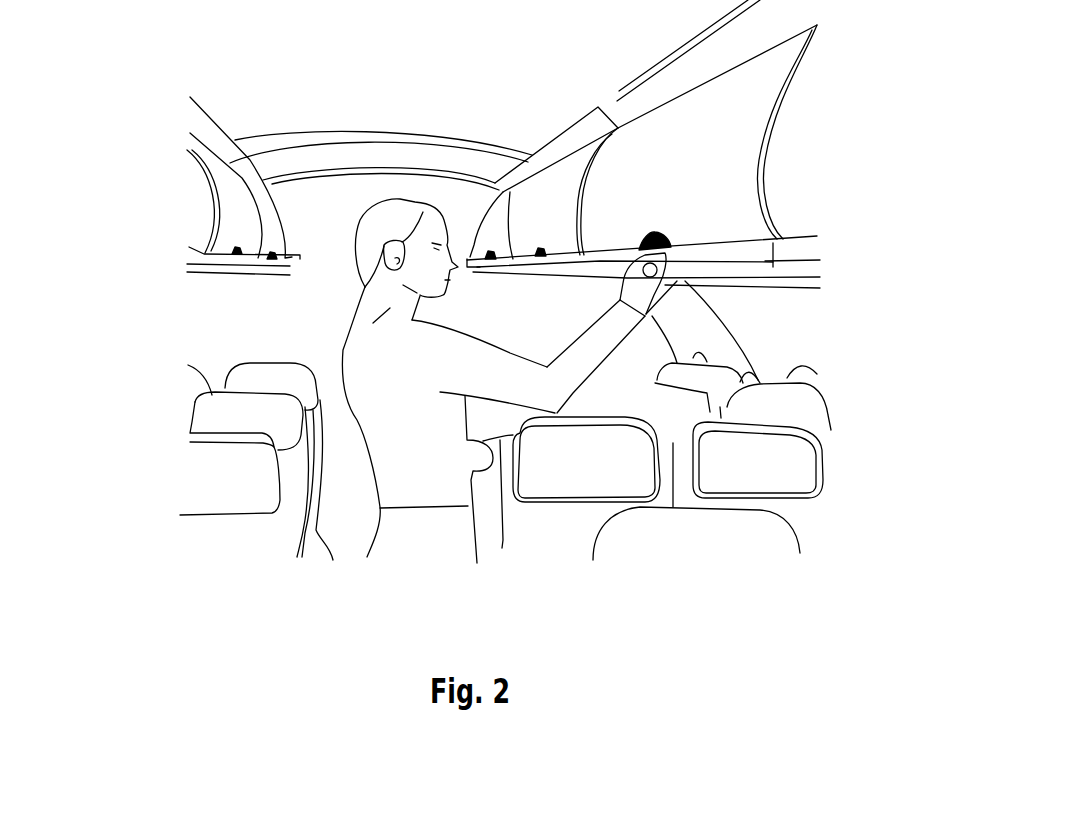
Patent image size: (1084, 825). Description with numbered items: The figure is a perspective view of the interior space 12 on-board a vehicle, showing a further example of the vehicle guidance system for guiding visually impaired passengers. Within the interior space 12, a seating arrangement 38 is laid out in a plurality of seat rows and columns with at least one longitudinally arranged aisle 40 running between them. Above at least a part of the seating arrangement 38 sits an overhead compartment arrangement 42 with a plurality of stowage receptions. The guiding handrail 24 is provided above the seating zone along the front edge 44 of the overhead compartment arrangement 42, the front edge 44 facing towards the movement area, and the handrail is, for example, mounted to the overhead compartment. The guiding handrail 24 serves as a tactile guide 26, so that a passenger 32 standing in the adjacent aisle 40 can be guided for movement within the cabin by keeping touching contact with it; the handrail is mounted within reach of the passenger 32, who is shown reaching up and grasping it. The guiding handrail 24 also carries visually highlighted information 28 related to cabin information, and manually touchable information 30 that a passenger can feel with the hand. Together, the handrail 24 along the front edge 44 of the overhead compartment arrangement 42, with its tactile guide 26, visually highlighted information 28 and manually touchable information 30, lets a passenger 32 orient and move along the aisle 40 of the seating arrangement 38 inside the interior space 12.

The interior space 12 is at (444, 198).
The guiding handrail 24 is at (735, 208).
The tactile guide 26 is at (778, 255).
The visually highlighted information 28 is at (697, 283).
The manually touchable information 30 is at (666, 258).
The passenger 32 is at (443, 540).
The seating arrangement 38 is at (186, 477).
The aisle 40 is at (352, 564).
The overhead compartment arrangement 42 is at (800, 100).
The front edge 44 is at (562, 216).